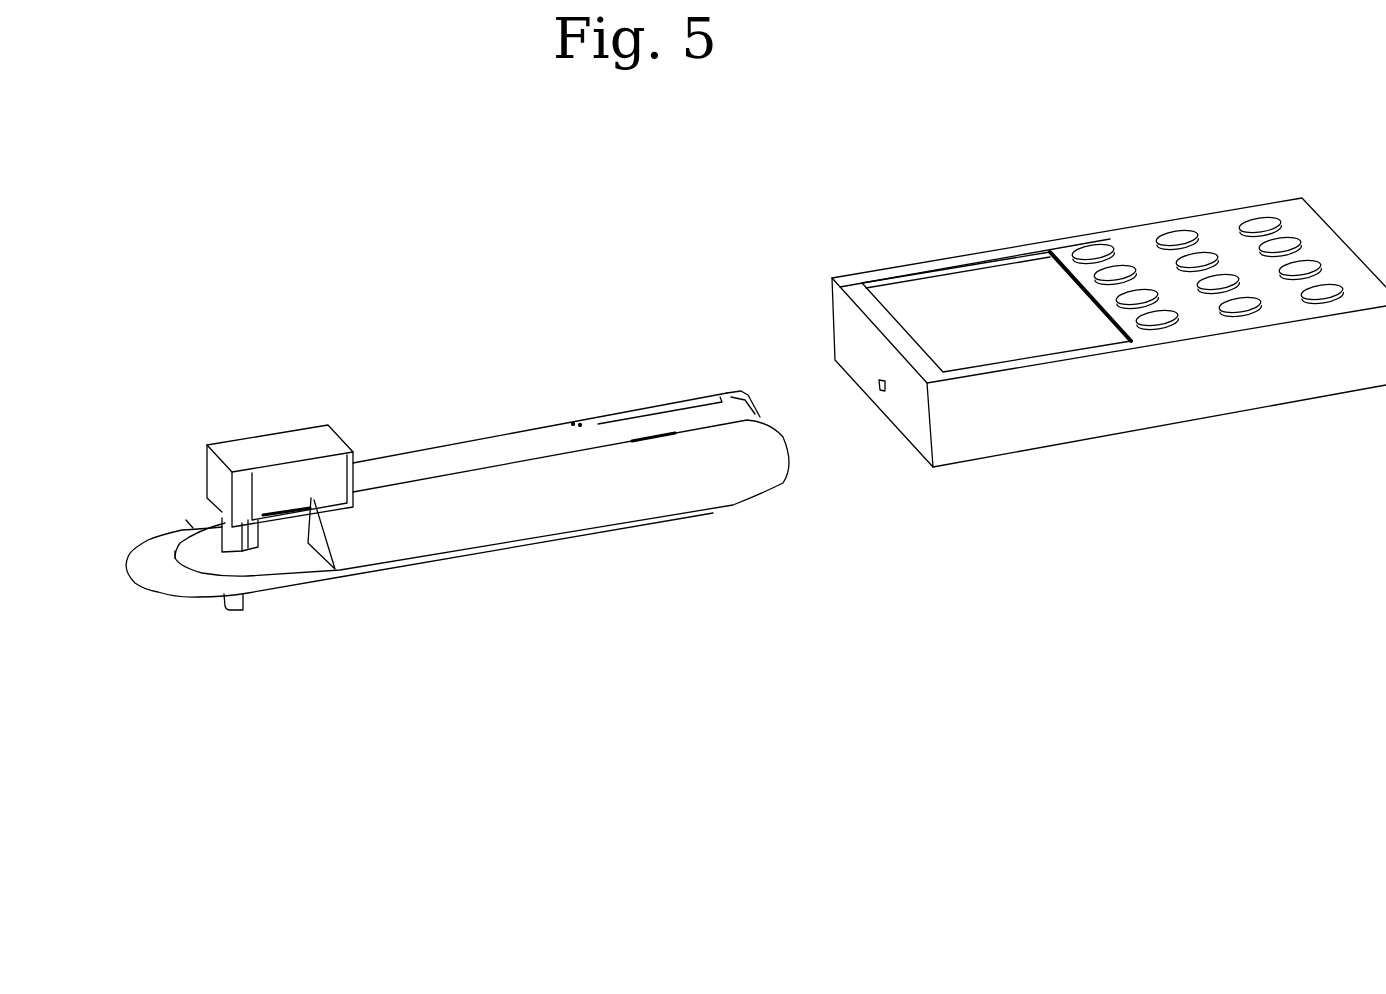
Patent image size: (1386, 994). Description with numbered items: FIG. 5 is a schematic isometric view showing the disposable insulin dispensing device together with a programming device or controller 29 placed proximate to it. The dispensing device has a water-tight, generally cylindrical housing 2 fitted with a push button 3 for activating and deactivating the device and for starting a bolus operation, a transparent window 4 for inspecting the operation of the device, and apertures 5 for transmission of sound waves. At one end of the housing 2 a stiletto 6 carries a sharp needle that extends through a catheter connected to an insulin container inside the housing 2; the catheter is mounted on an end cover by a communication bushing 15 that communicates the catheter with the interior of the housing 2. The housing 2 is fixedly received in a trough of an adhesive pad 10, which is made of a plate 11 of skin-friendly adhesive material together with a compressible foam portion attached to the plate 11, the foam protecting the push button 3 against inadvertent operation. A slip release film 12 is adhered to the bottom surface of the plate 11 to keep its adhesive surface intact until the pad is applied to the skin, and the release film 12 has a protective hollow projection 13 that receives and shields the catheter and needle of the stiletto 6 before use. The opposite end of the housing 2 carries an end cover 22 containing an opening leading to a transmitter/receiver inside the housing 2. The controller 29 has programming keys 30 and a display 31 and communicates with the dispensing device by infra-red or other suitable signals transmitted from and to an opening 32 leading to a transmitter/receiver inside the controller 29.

The housing 2 is at (490, 448).
The push button 3 is at (663, 437).
The transparent window 4 is at (695, 400).
The apertures 5 is at (572, 417).
The stiletto 6 is at (292, 488).
The adhesive pad 10 is at (578, 498).
The plate 11 is at (297, 555).
The slip release film 12 is at (162, 570).
The protective hollow projection 13 is at (240, 613).
The communication bushing 15 is at (193, 528).
The end cover 22 is at (758, 400).
The programming device or controller 29 is at (1220, 235).
The programming keys 30 is at (1093, 248).
The display 31 is at (953, 310).
The opening 32 is at (880, 391).